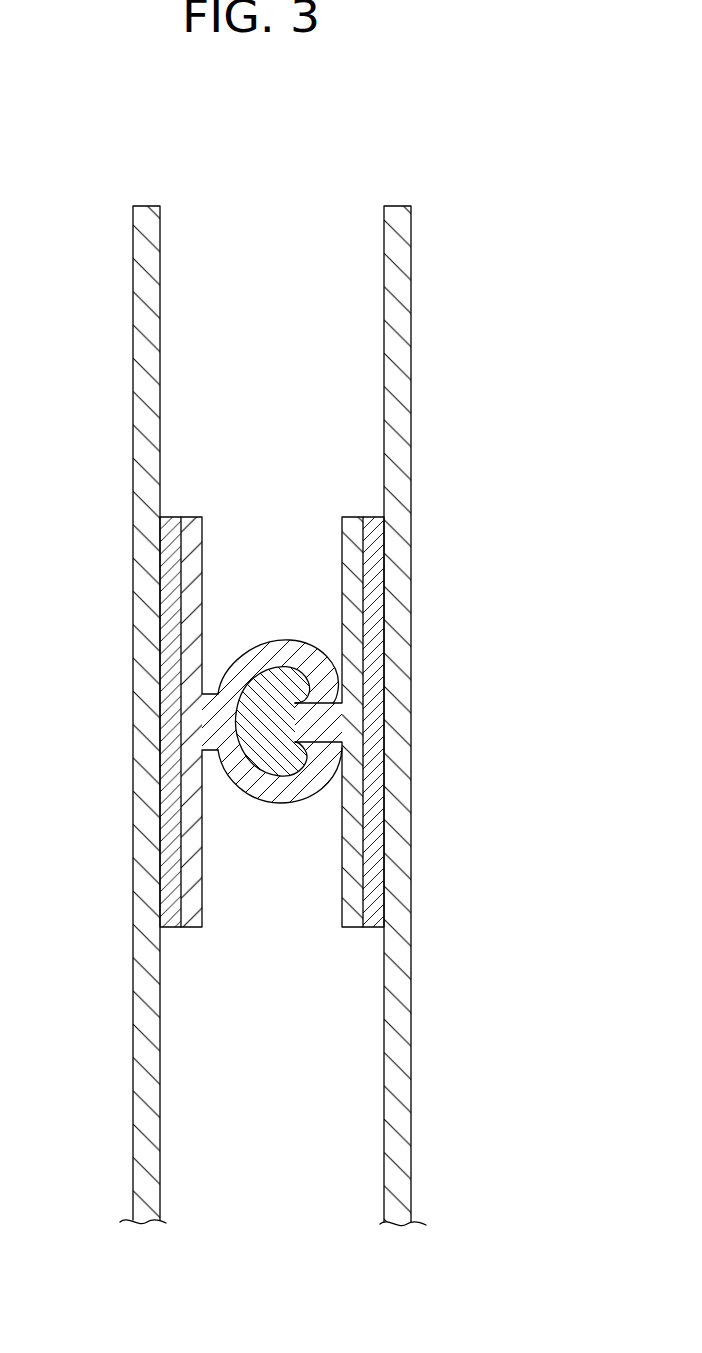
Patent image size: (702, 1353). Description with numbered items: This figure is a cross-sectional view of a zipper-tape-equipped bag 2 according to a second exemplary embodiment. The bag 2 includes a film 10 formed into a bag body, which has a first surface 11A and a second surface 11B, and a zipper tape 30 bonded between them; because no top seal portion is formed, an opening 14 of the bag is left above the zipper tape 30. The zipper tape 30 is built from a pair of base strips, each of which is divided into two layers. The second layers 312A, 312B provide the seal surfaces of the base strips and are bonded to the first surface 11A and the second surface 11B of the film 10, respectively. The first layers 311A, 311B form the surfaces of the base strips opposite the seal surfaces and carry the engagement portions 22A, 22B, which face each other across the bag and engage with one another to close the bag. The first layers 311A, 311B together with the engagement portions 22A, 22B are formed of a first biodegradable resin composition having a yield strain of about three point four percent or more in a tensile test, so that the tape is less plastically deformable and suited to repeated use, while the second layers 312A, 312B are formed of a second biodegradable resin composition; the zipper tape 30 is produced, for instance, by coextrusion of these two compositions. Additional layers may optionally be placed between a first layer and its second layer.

The zipper-tape-equipped bag 2 is at (589, 275).
The film 10 is at (348, 1250).
The first surface 11A is at (155, 1101).
The second surface 11B is at (383, 1101).
The opening 14 is at (280, 207).
The zipper tape 30 is at (286, 436).
The engagement portion 22A is at (273, 718).
The engagement portion 22B is at (245, 680).
The first layer 311A is at (350, 530).
The first layer 311B is at (197, 530).
The second layer 312A is at (376, 532).
The second layer 312B is at (172, 529).